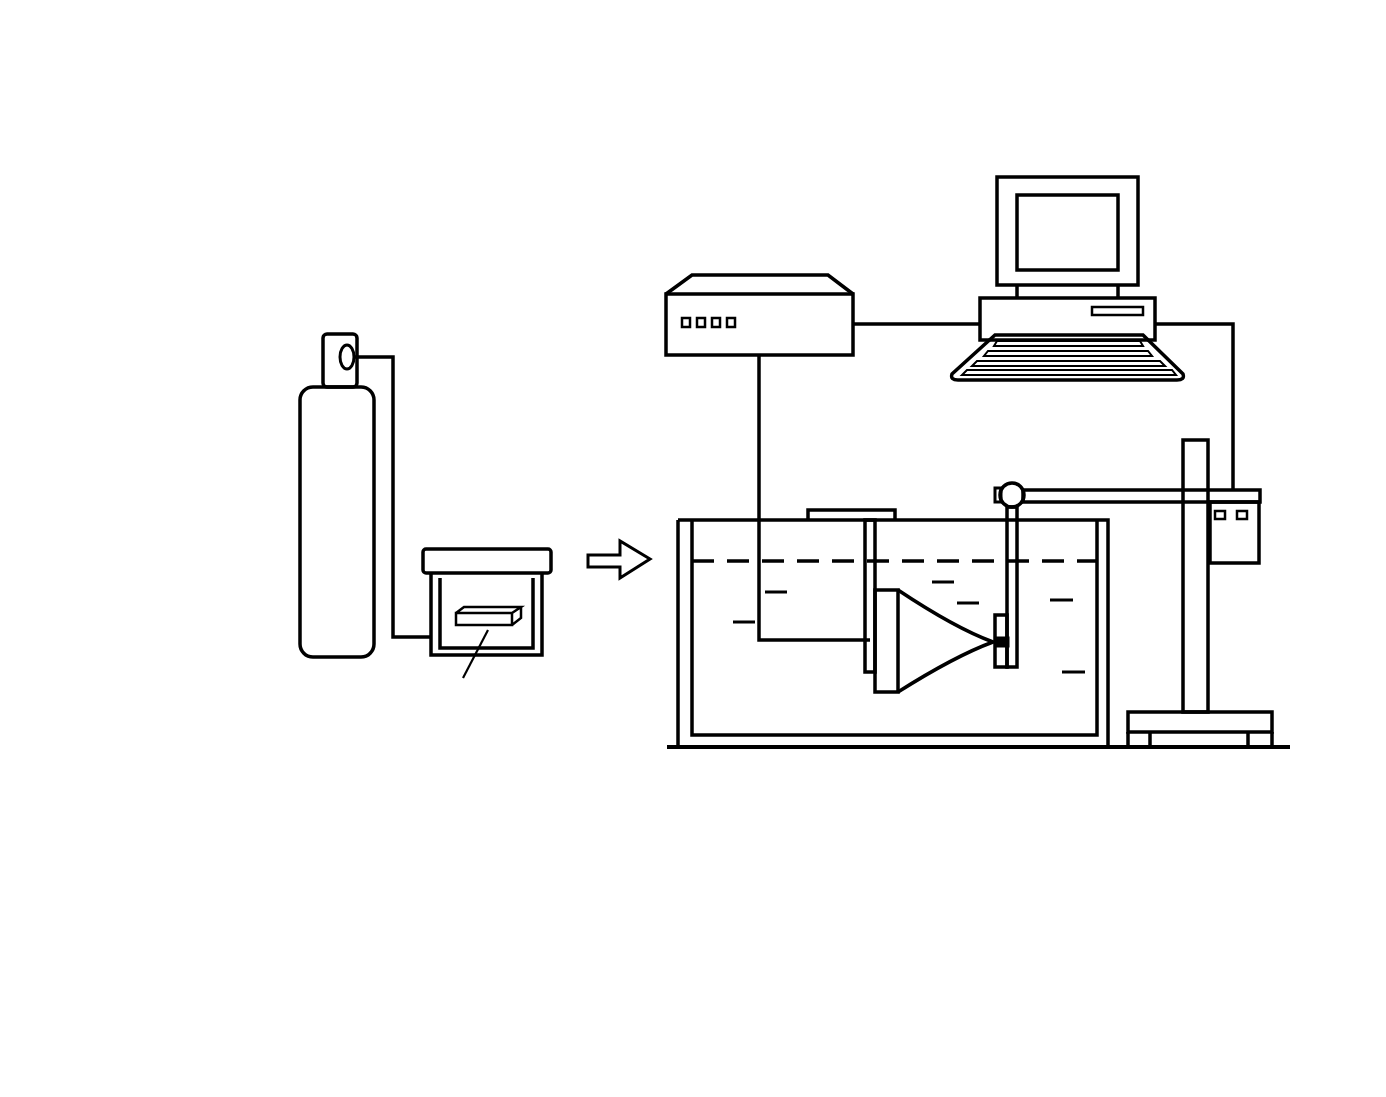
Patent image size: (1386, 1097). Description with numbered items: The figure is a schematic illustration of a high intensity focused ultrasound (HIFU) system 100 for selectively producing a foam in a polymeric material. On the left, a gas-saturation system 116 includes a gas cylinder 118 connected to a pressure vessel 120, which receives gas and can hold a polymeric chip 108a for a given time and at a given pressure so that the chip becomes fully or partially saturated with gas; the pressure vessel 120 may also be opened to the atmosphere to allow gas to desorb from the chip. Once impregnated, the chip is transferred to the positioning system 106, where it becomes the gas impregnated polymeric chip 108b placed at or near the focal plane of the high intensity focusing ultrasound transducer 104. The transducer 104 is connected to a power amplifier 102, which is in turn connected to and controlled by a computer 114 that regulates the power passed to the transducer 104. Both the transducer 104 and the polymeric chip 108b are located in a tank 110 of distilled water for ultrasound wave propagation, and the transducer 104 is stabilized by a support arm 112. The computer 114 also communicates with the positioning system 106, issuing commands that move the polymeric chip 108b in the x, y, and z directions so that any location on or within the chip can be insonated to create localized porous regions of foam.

The high intensity focused ultrasound (HIFU) system 100 is at (1235, 179).
The power amplifier 102 is at (666, 318).
The high intensity focusing ultrasound transducer 104 is at (928, 607).
The positioning system 106 is at (1260, 518).
The polymeric chip 108a is at (456, 622).
The gas impregnated polymeric chip 108b is at (1002, 613).
The tank 110 is at (678, 650).
The support arm 112 is at (849, 510).
The computer 114 is at (997, 226).
The gas-saturation system 116 is at (273, 358).
The gas cylinder 118 is at (300, 392).
The pressure vessel 120 is at (543, 607).